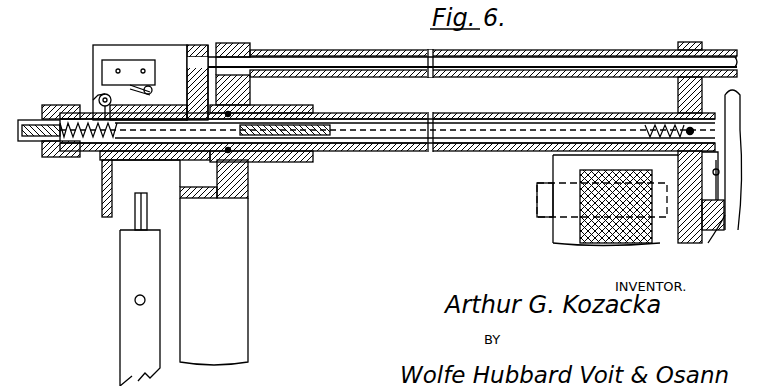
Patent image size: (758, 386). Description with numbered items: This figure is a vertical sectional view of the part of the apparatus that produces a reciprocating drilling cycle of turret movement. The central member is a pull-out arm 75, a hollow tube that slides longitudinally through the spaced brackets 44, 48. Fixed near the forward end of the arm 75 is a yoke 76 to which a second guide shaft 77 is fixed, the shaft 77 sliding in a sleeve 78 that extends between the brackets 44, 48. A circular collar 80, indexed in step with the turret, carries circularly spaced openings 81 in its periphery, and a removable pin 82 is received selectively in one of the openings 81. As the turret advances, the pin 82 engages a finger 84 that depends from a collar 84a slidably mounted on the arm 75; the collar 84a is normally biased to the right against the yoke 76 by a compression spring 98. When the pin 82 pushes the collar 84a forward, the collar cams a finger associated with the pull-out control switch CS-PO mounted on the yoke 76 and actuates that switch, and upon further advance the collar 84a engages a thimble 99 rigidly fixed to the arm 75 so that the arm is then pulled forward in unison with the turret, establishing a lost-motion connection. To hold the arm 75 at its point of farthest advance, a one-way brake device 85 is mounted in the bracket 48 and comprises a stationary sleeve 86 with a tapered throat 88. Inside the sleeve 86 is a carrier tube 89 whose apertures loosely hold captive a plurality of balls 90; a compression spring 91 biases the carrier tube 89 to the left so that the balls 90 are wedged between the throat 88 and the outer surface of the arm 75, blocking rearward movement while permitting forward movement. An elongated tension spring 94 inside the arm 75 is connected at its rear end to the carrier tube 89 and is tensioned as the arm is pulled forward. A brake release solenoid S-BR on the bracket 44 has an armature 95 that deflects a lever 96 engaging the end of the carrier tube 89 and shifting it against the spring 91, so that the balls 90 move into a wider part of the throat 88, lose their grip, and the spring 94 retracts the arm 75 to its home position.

The pull-out control switch CS-PO is at (128, 68).
The yoke 76 is at (199, 45).
The second guide shaft 77 is at (305, 61).
The sleeve 78 is at (375, 50).
The bracket 44 is at (697, 42).
The compression spring 98 is at (88, 118).
The thimble 99 is at (48, 156).
The finger 84 is at (102, 205).
The collar 84a is at (136, 152).
The tapered throat 88 is at (203, 160).
The pin 82 is at (135, 215).
The circular collar 80 is at (130, 251).
The openings 81 is at (135, 300).
The bracket 48 is at (232, 288).
The stationary sleeve 86 is at (262, 162).
The balls 90 is at (245, 198).
The one-way brake device 85 is at (258, 104).
The compression spring 91 is at (325, 113).
The pull-out arm 75 is at (395, 97).
The carrier tube 89 is at (425, 113).
The tension spring 94 is at (658, 113).
The brake release solenoid S-BR is at (585, 182).
The armature 95 is at (677, 222).
The lever 96 is at (722, 226).